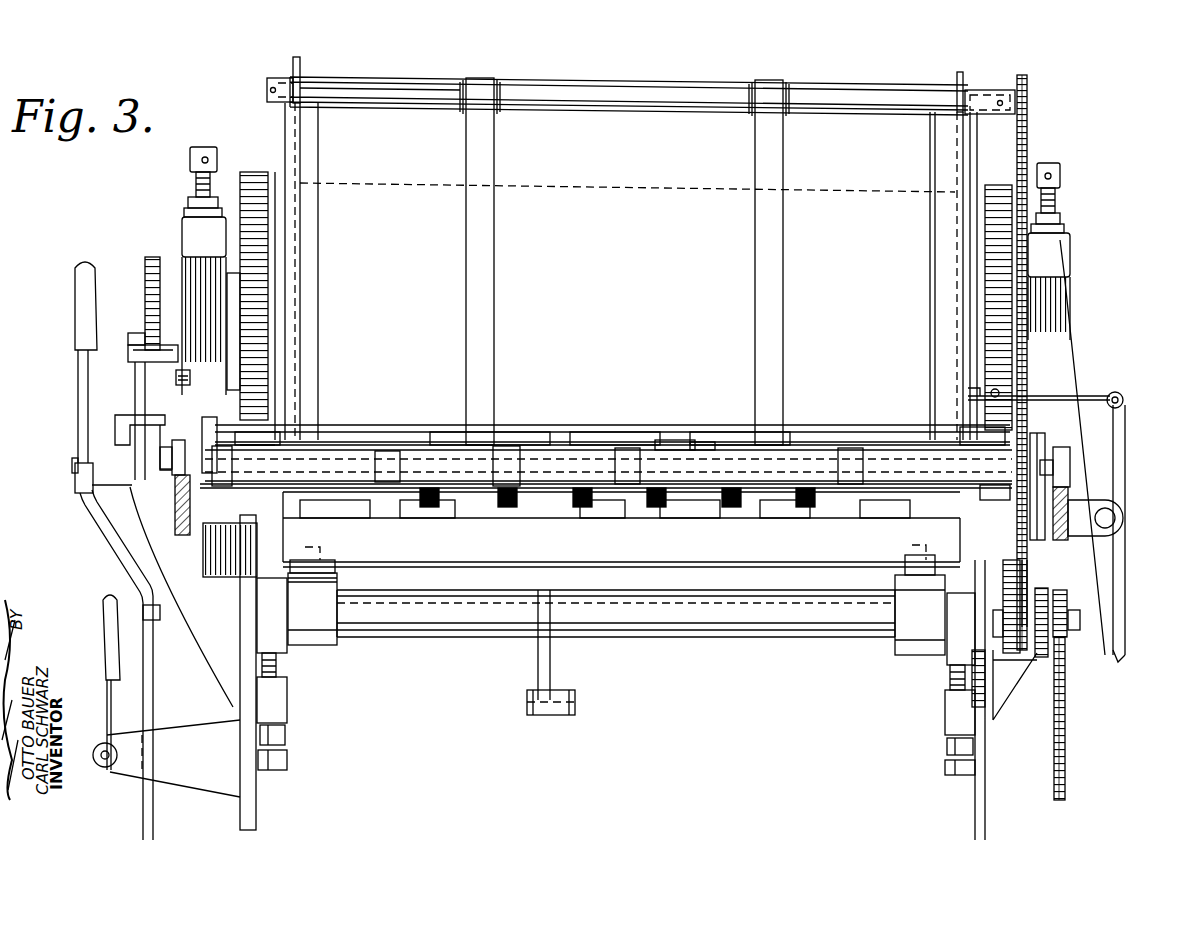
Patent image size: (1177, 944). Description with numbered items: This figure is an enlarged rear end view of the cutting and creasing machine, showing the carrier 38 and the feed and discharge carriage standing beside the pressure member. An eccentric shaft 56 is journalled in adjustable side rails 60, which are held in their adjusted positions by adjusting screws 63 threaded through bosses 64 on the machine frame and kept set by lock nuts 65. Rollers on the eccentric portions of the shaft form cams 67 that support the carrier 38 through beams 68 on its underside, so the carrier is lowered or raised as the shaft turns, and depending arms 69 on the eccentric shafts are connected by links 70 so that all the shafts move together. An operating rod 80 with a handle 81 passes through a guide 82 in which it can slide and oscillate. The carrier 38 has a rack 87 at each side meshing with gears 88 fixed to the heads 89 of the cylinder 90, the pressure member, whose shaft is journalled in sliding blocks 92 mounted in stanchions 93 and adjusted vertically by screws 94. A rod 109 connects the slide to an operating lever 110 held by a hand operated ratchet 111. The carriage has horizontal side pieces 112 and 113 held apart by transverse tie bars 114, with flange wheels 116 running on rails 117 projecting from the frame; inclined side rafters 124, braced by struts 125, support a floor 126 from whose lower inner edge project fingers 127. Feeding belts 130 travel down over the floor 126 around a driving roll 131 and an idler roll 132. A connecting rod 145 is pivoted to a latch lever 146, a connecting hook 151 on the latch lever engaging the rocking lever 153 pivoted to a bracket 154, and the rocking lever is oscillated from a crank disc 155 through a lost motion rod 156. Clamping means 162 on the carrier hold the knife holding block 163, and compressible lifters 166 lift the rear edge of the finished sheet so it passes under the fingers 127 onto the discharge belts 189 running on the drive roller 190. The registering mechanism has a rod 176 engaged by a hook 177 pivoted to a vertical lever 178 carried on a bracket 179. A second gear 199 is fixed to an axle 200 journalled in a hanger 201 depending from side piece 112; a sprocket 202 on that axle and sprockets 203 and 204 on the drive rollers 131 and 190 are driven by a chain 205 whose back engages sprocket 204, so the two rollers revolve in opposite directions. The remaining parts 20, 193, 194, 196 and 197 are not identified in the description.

The side plate 20 is at (256, 816).
The carrier 38 is at (742, 590).
The eccentric shaft 56 is at (446, 628).
The adjustable side rails 60 is at (270, 648).
The adjusting screws 63 is at (287, 762).
The bosses 64 is at (287, 708).
The lock nuts 65 is at (285, 736).
The cams 67 is at (338, 590).
The beams 68 is at (325, 560).
The depending arms 69 is at (538, 655).
The links 70 is at (556, 716).
The operating rod 80 is at (102, 768).
The handle 81 is at (106, 612).
The guide 82 is at (181, 745).
The rack 87 is at (286, 440).
The gears 88 is at (262, 345).
The heads 89 is at (277, 290).
The pressure cylinder 90 is at (410, 184).
The sliding blocks 92 is at (232, 290).
The stanchions 93 is at (186, 232).
The screws 94 is at (190, 155).
The rod 109 is at (157, 621).
The operating lever 110 is at (100, 530).
The hand operated ratchet 111 is at (72, 468).
The horizontal side piece 112 is at (1041, 437).
The horizontal side piece 113 is at (192, 545).
The transverse tie bars 114 is at (362, 460).
The flange wheels 116 is at (172, 458).
The rails 117 is at (182, 520).
The inclined side rafters 124 is at (293, 64).
The struts 125 is at (285, 126).
The floor 126 is at (600, 130).
The fingers 127 is at (640, 412).
The feeding belts 130 is at (466, 143).
The driving roll 131 is at (415, 92).
The idler roll 132 is at (504, 430).
The connecting rod 145 is at (190, 372).
The latch lever 146 is at (205, 395).
The connecting hook 151 is at (158, 348).
The rocking lever 153 is at (136, 395).
The bracket 154 is at (146, 430).
The crank disc 155 is at (145, 257).
The lost motion rod 156 is at (130, 340).
The clamping means 162 is at (620, 519).
The knife holding block 163 is at (550, 519).
The compressible lifters 166 is at (665, 507).
The rod 176 is at (970, 392).
The hook 177 is at (1066, 397).
The vertical lever 178 is at (1119, 440).
The bracket 179 is at (1075, 532).
The discharge belts 189 is at (510, 447).
The drive roller 190 is at (700, 445).
The nut 193 is at (1080, 622).
The support bar 194 is at (988, 690).
The gear 196 is at (1068, 613).
The chain rack 197 is at (1065, 729).
The second gear 199 is at (1040, 590).
The axle 200 is at (1080, 652).
The hanger 201 is at (1040, 572).
The sprocket 202 is at (1015, 668).
The sprocket 203 is at (1030, 85).
The sprocket 204 is at (988, 500).
The chain 205 is at (1073, 325).